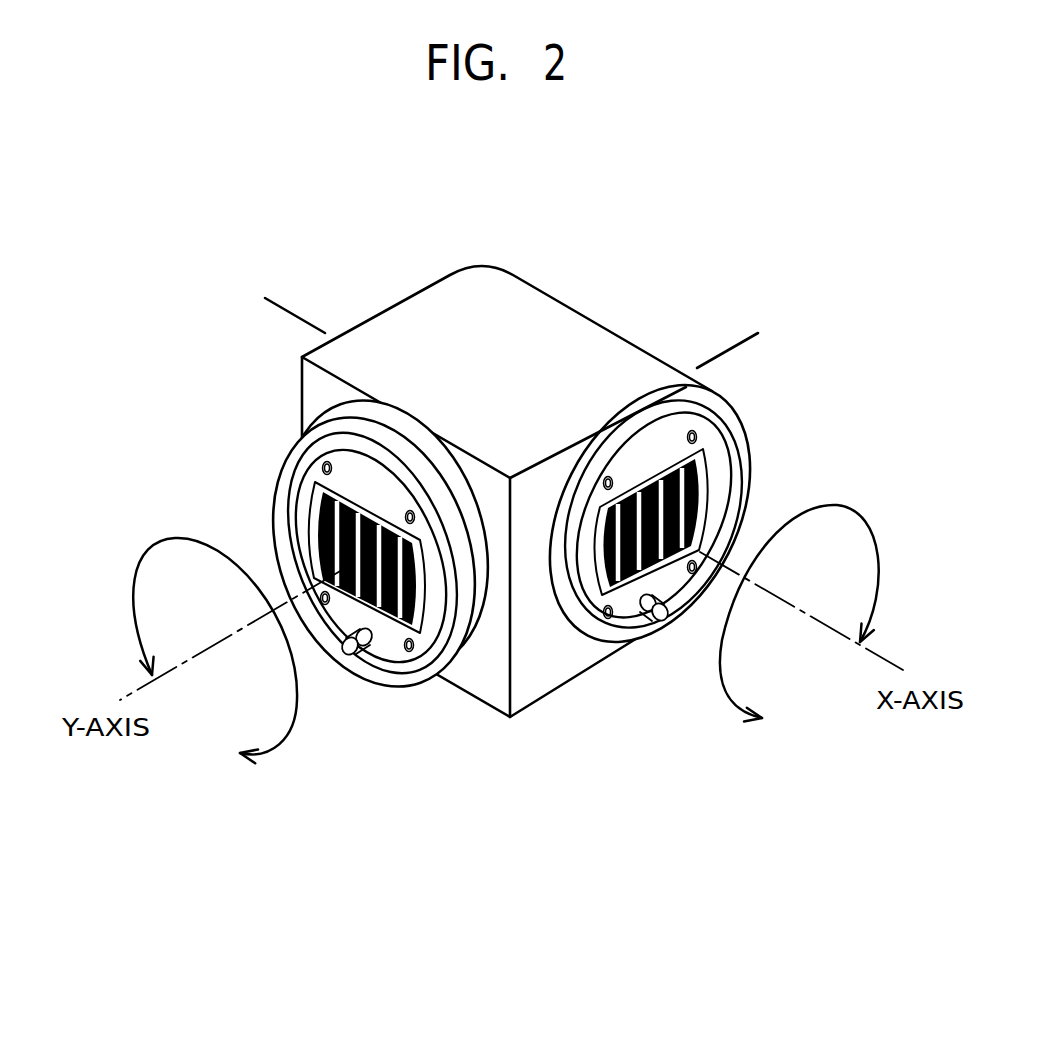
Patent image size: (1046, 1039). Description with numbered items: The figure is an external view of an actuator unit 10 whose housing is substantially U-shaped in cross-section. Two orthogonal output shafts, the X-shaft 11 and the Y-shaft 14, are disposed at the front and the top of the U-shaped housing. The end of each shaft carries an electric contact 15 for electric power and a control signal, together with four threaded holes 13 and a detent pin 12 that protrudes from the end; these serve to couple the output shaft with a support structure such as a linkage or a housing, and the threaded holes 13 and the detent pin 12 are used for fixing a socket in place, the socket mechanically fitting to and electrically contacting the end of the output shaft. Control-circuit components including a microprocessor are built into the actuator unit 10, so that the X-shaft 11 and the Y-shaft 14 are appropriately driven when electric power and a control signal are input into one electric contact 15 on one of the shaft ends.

The actuator unit 10 is at (517, 320).
The X-shaft 11 is at (723, 460).
The detent pin 12 is at (352, 660).
The threaded holes 13 is at (323, 466).
The Y-shaft 14 is at (293, 498).
The electric contact 15 is at (390, 620).